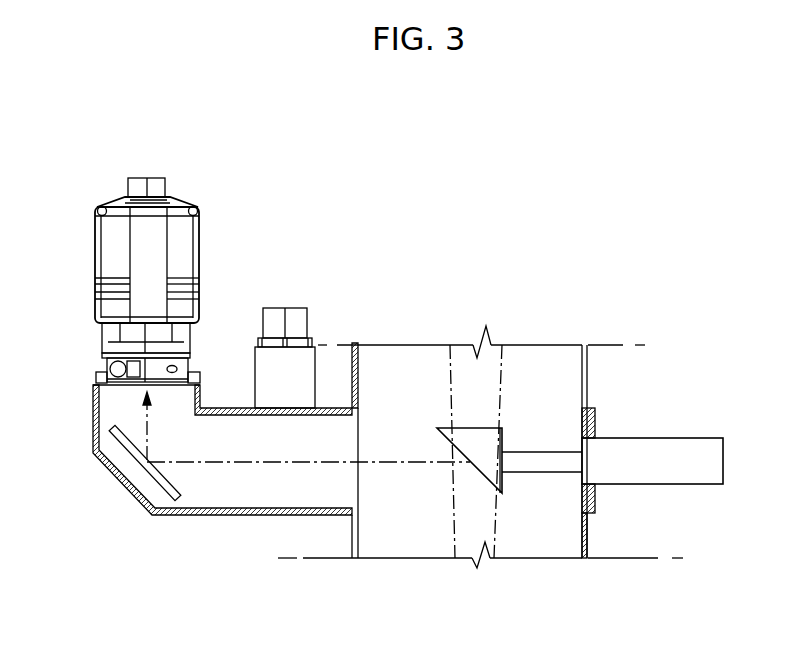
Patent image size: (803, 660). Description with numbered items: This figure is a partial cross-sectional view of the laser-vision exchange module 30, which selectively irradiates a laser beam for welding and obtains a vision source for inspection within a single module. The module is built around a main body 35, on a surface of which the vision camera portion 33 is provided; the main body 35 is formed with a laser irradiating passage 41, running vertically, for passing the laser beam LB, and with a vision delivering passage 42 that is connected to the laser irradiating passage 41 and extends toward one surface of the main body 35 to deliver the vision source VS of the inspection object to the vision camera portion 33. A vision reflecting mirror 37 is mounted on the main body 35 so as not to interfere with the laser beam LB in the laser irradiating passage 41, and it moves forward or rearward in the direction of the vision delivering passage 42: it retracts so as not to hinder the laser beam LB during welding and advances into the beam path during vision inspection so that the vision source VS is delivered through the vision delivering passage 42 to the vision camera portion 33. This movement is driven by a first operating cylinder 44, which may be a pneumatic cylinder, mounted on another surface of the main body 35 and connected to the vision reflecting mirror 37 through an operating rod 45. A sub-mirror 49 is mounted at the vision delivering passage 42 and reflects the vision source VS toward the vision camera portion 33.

The laser-vision exchange module 30 is at (415, 168).
The vision camera portion 33 is at (98, 226).
The main body 35 is at (292, 523).
The vision reflecting mirror 37 is at (470, 428).
The laser irradiating passage 41 is at (418, 507).
The vision delivering passage 42 is at (248, 483).
The first operating cylinder 44 is at (644, 438).
The operating rod 45 is at (553, 464).
The sub-mirror 49 is at (142, 470).
The vision source VS is at (268, 465).
The laser beam LB is at (453, 503).